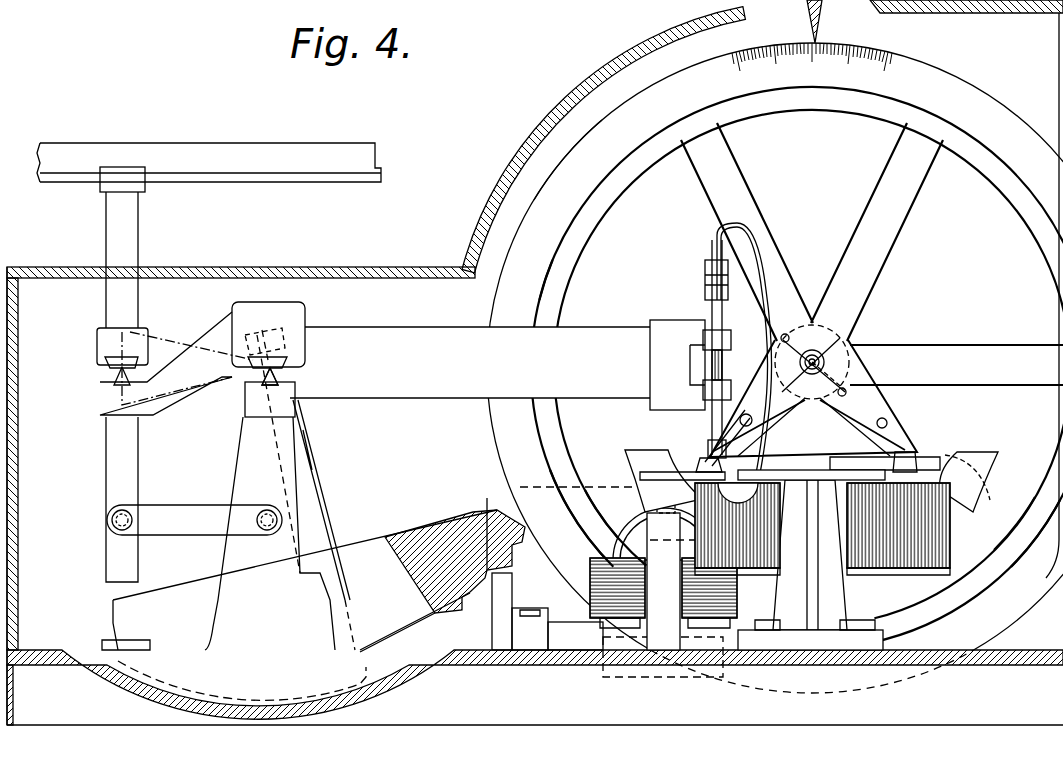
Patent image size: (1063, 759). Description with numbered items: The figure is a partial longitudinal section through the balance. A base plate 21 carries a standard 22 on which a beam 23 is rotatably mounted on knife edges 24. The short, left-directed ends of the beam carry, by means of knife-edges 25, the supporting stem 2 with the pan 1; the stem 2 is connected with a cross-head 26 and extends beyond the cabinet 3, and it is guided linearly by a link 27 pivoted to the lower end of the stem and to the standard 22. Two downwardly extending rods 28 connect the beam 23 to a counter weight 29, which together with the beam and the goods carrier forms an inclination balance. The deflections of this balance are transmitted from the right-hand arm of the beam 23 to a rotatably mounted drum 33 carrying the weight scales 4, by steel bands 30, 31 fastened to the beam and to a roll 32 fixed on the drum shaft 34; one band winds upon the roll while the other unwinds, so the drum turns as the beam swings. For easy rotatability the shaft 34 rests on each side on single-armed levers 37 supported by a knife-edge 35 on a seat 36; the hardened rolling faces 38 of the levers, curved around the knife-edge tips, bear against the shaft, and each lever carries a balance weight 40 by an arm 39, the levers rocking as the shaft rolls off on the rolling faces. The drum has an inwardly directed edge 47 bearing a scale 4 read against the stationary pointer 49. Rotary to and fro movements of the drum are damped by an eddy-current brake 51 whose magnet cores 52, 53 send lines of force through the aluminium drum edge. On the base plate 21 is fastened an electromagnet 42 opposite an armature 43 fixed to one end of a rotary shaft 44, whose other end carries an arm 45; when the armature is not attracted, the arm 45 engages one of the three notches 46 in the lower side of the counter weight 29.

The pan 1 is at (210, 150).
The supporting stem 2 is at (106, 219).
The cabinet 3 is at (263, 266).
The weight scales 4 is at (968, 80).
The base plate 21 is at (525, 660).
The standard 22 is at (292, 465).
The beam 23 is at (400, 340).
The knife edges 24 is at (282, 378).
The knife-edges 25 is at (114, 378).
The cross-head 26 is at (97, 333).
The link 27 is at (188, 496).
The rods 28 is at (318, 512).
The counter weight 29 is at (440, 525).
The steel band 30 is at (765, 262).
The steel band 31 is at (790, 475).
The roll 32 is at (822, 340).
The drum 33 is at (550, 160).
The shaft 34 is at (836, 388).
The knife-edge 35 is at (712, 455).
The seat 36 is at (700, 462).
The single-armed levers 37 is at (772, 350).
The rolling faces 38 is at (800, 338).
The arm 39 is at (746, 418).
The balance weight 40 is at (638, 452).
The electromagnet 42 is at (730, 592).
The armature 43 is at (645, 652).
The rotary shaft 44 is at (580, 650).
The arm 45 is at (512, 598).
The notches 46 is at (487, 515).
The inwardly directed edge 47 is at (538, 292).
The stationary pointer 49 is at (818, 12).
The eddy-current brake 51 is at (872, 556).
The magnet core 52 is at (606, 488).
The magnet core 53 is at (548, 490).